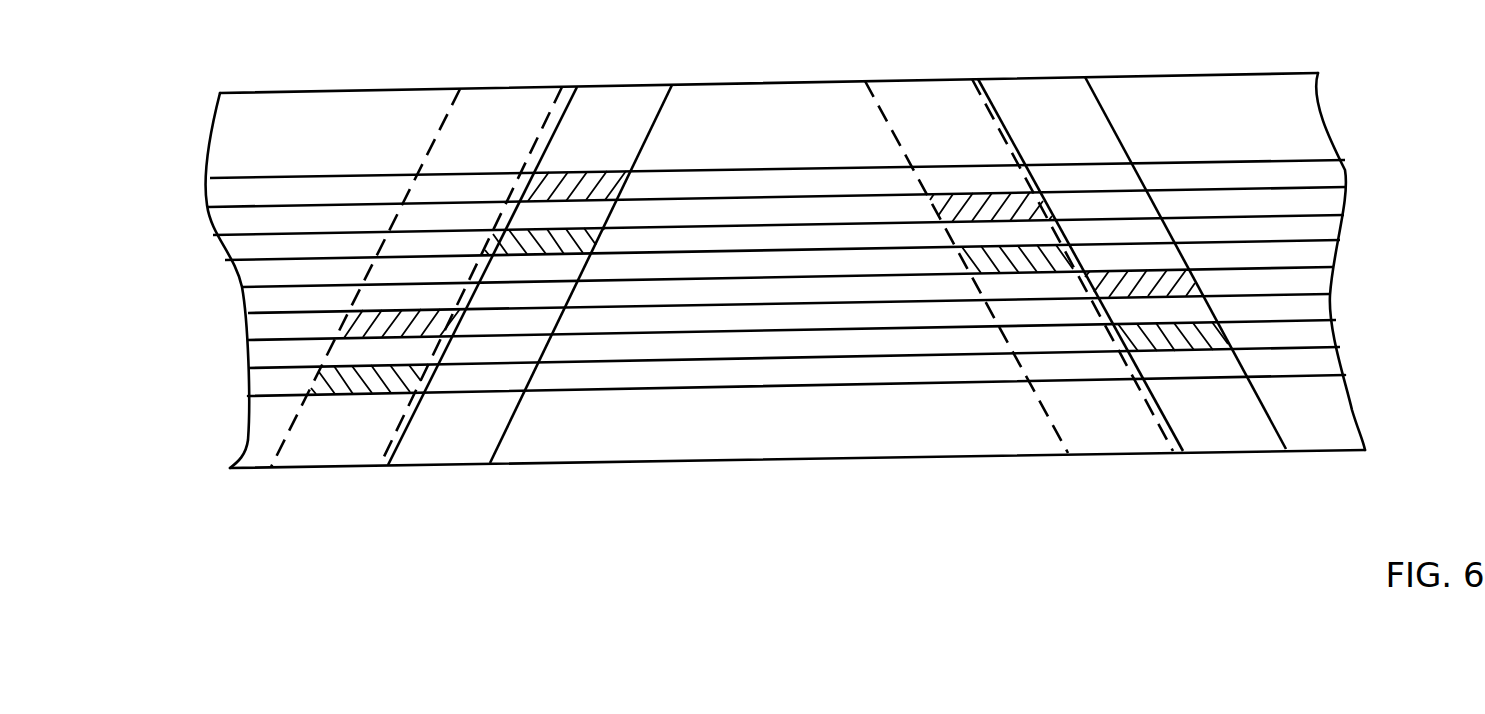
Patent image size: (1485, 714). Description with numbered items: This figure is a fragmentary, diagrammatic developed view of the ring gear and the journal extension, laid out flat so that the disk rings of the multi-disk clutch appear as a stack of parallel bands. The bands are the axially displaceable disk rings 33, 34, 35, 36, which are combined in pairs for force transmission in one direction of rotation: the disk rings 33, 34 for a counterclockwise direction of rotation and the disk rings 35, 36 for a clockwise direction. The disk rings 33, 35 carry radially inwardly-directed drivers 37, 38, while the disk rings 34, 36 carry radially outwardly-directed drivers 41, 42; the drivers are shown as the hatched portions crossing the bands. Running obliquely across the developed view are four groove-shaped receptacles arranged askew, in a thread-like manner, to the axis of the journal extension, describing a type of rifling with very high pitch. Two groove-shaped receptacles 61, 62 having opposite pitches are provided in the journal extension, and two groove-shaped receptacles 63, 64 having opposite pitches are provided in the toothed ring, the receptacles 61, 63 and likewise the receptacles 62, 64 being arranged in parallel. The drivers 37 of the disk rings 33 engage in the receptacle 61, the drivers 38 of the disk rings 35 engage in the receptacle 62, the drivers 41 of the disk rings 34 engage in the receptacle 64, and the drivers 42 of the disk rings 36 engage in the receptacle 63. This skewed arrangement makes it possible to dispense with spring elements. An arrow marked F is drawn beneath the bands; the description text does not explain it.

The disk ring 33 is at (1318, 312).
The disk ring 34 is at (1275, 282).
The disk ring 35 is at (1317, 203).
The disk ring 36 is at (1272, 175).
The driver 37 is at (350, 327).
The driver 38 is at (952, 204).
The driver 41 is at (1123, 280).
The driver 42 is at (508, 231).
The groove-shaped receptacle 61 is at (327, 442).
The groove-shaped receptacle 62 is at (1116, 422).
The groove-shaped receptacle 63 is at (445, 440).
The groove-shaped receptacle 64 is at (1217, 422).
The feed direction arrow F is at (717, 405).